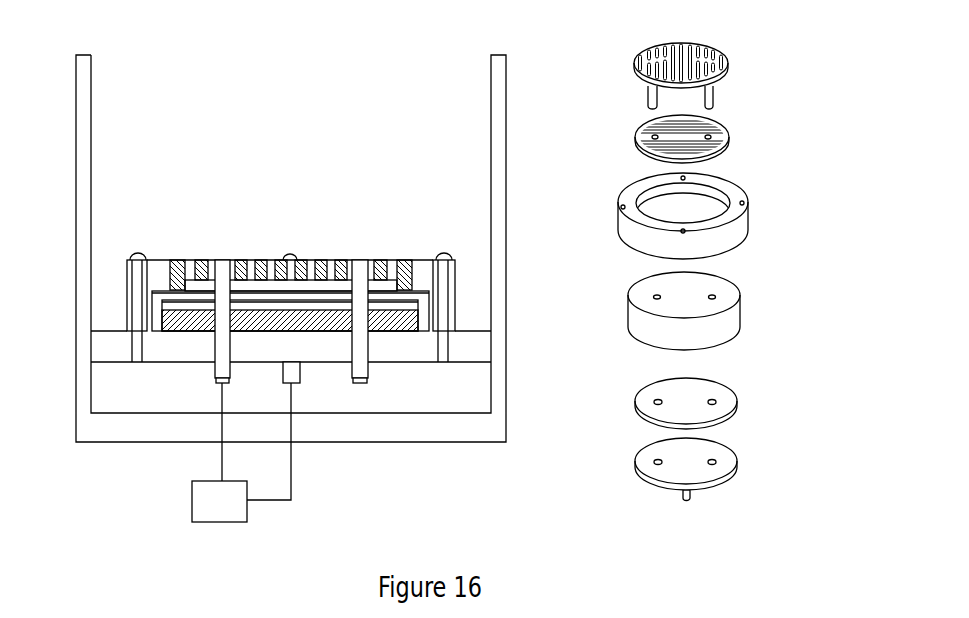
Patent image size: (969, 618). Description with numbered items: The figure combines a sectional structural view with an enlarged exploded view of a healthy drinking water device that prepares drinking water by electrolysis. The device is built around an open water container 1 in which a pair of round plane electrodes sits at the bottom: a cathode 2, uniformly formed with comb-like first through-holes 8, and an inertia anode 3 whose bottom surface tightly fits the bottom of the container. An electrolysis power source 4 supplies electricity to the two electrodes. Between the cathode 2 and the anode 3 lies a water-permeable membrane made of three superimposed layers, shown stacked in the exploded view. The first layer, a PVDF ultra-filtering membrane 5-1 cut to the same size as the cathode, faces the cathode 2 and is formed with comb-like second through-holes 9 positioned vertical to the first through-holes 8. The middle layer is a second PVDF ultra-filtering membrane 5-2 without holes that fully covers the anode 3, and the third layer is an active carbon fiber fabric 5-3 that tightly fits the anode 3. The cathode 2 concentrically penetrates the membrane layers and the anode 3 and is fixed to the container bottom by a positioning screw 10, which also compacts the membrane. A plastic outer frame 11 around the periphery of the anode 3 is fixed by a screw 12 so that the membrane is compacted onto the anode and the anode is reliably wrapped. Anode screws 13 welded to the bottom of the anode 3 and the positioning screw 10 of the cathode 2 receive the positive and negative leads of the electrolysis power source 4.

The water container 1 is at (506, 112).
The cathode 2 is at (640, 85).
The anode 3 is at (635, 457).
The electrolysis power source 4 is at (203, 503).
The PVDF ultra-filtering membrane 5-1 is at (640, 148).
The PVDF ultra-filtering membrane 5-2 is at (628, 308).
The active carbon fiber fabric 5-3 is at (635, 395).
The comb-like first through-holes 8 is at (650, 48).
The comb-like second through-holes 9 is at (710, 125).
The positioning screw 10 is at (215, 380).
The plastic outer frame 11 is at (617, 221).
The screw 12 is at (443, 358).
The anode screw 13 is at (297, 380).